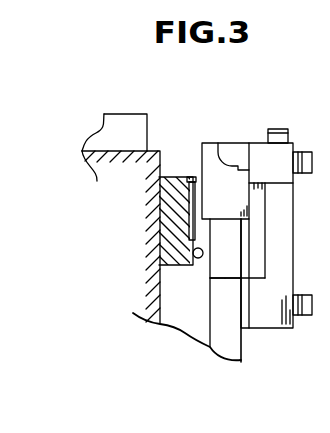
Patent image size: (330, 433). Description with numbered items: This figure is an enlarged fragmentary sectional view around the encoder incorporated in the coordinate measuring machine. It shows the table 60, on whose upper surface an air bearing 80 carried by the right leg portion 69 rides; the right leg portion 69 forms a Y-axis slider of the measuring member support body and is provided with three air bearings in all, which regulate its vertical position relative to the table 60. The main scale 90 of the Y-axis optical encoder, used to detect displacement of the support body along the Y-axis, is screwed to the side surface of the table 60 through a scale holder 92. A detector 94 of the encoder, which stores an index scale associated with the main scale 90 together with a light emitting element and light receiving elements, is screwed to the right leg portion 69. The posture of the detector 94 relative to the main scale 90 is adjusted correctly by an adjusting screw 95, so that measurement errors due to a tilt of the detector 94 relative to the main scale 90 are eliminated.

The table 60 is at (120, 150).
The air bearing 80 is at (148, 132).
The main scale 90 is at (191, 177).
The scale holder 92 is at (200, 259).
The detector 94 is at (222, 143).
The adjusting screw 95 is at (283, 128).
The right leg portion 69 is at (232, 333).